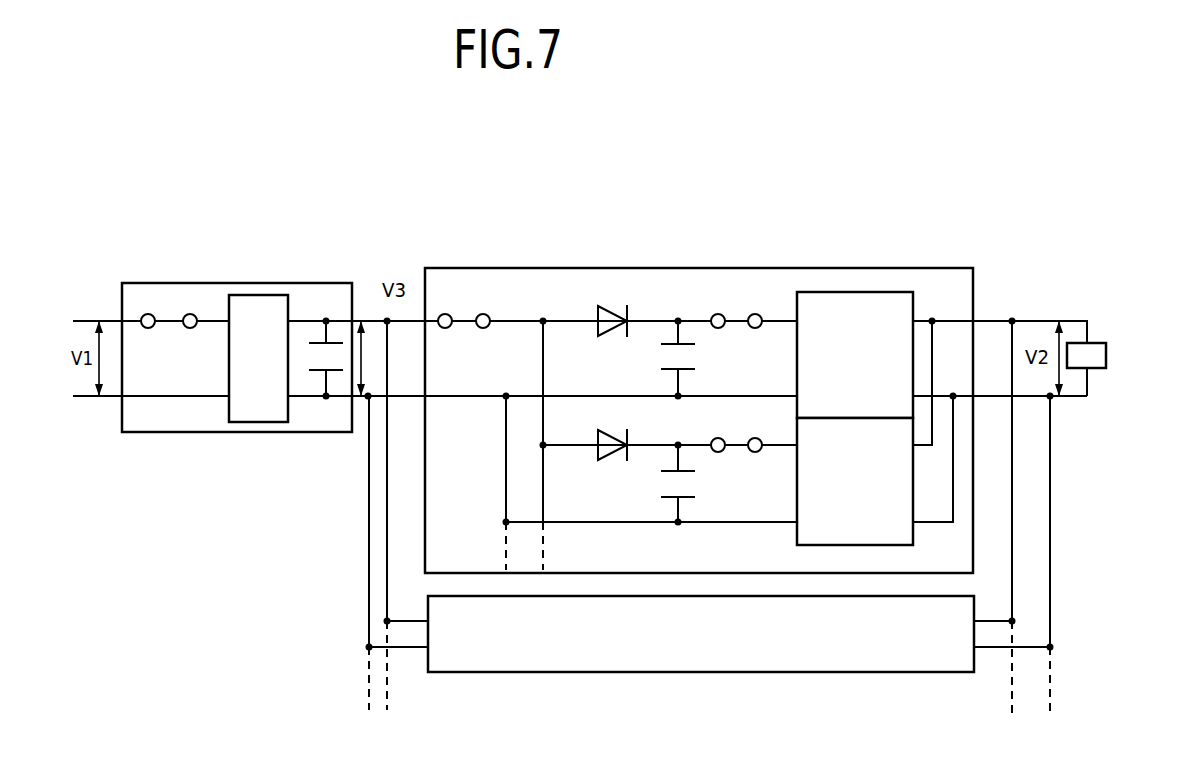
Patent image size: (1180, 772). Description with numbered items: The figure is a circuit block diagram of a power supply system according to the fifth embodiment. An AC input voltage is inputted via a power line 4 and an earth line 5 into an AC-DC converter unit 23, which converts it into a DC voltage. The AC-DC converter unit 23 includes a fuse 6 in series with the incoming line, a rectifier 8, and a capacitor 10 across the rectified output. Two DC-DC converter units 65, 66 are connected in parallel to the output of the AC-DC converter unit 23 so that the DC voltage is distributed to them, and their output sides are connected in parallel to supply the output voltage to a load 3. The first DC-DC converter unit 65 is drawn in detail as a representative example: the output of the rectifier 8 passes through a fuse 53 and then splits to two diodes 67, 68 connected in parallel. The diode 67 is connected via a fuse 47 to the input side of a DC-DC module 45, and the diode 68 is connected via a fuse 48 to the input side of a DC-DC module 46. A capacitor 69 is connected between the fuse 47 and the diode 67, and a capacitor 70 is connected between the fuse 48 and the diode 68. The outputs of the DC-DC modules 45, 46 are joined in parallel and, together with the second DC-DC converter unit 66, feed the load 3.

The load 3 is at (1093, 368).
The power line 4 is at (80, 320).
The earth line 5 is at (85, 398).
The fuse 6 is at (167, 322).
The rectifier 8 is at (240, 422).
The capacitor 10 is at (316, 378).
The AC-DC converter unit 23 is at (352, 283).
The DC-DC module 45 is at (888, 292).
The DC-DC module 46 is at (915, 535).
The fuse 47 is at (737, 322).
The fuse 48 is at (737, 446).
The fuse 53 is at (462, 322).
The DC-DC converter unit 65 is at (472, 268).
The DC-DC converter unit 66 is at (710, 672).
The diode 67 is at (595, 310).
The diode 68 is at (595, 433).
The capacitor 69 is at (663, 357).
The capacitor 70 is at (663, 485).